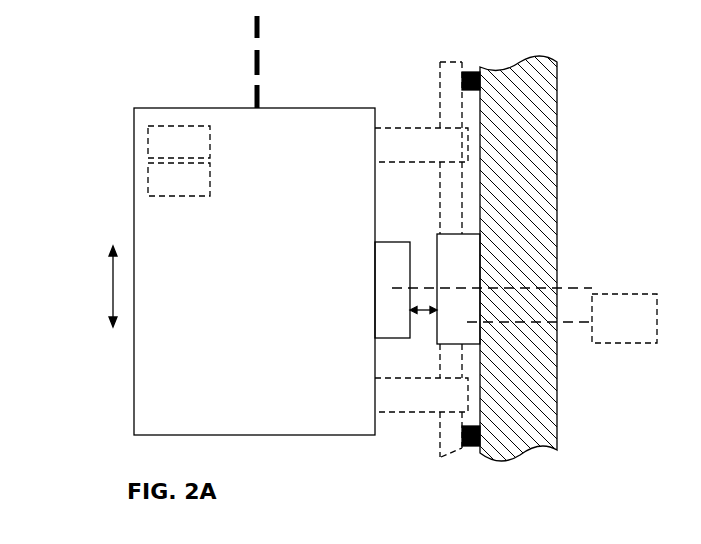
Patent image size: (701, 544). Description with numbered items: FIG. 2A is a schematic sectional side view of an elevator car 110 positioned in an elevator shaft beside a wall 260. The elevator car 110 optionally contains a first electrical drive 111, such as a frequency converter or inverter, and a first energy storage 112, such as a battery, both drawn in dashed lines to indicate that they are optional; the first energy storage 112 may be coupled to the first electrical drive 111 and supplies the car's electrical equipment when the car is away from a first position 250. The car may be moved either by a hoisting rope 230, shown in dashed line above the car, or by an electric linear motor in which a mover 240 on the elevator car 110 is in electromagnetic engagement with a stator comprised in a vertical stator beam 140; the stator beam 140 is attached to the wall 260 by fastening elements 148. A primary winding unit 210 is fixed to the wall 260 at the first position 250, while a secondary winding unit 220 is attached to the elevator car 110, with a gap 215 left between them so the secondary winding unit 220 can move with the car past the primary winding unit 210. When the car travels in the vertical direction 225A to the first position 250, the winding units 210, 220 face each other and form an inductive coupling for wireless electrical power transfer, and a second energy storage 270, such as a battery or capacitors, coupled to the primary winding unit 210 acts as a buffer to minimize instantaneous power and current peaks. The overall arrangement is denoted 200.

The elevator car 110 is at (275, 281).
The first electrical drive 111 is at (198, 152).
The first energy storage 112 is at (198, 191).
The stator beam 140 is at (452, 78).
The fastening elements 148 is at (474, 66).
The mounting system 200 is at (357, 336).
The primary winding unit 210 is at (455, 242).
The gap 215 is at (427, 314).
The secondary winding unit 220 is at (382, 302).
The vertical direction 225A is at (112, 296).
The hoisting rope 230 is at (256, 62).
The mover 240 is at (428, 136).
The first position 250 is at (585, 288).
The wall 260 is at (557, 238).
The second energy storage 270 is at (643, 328).